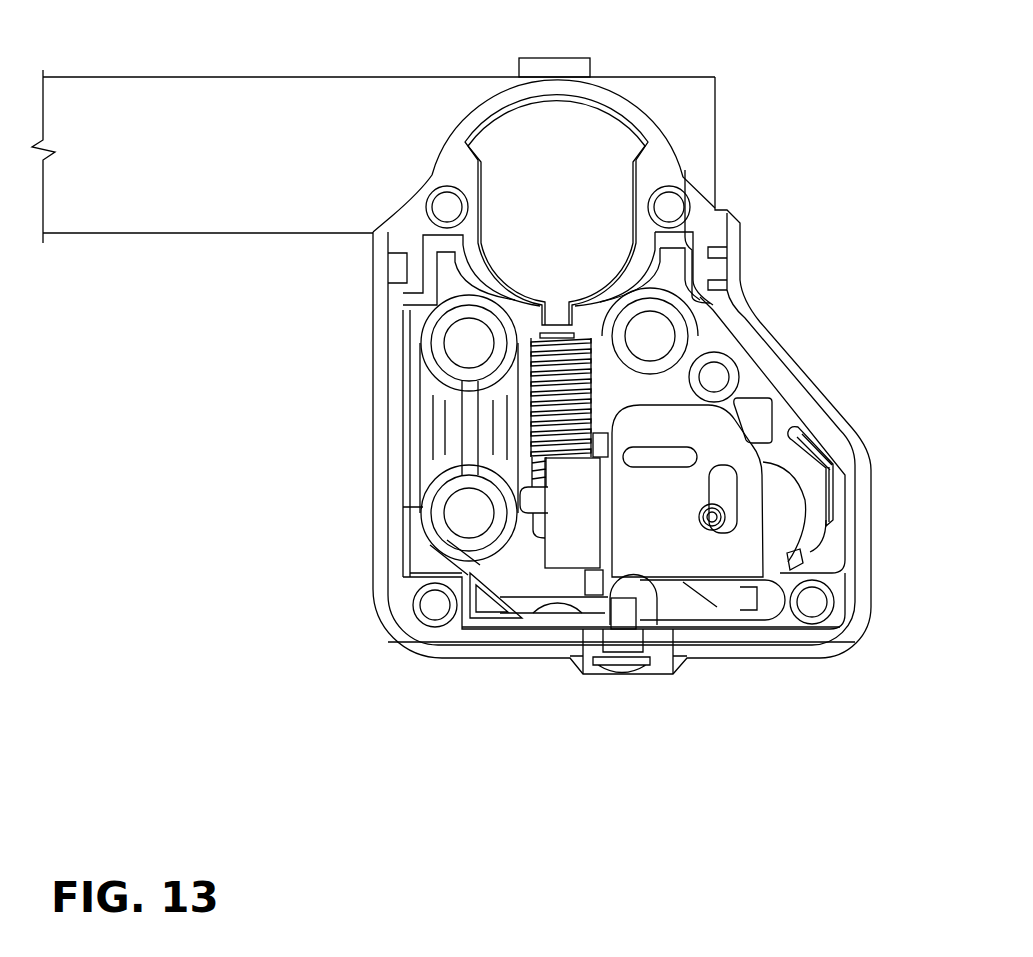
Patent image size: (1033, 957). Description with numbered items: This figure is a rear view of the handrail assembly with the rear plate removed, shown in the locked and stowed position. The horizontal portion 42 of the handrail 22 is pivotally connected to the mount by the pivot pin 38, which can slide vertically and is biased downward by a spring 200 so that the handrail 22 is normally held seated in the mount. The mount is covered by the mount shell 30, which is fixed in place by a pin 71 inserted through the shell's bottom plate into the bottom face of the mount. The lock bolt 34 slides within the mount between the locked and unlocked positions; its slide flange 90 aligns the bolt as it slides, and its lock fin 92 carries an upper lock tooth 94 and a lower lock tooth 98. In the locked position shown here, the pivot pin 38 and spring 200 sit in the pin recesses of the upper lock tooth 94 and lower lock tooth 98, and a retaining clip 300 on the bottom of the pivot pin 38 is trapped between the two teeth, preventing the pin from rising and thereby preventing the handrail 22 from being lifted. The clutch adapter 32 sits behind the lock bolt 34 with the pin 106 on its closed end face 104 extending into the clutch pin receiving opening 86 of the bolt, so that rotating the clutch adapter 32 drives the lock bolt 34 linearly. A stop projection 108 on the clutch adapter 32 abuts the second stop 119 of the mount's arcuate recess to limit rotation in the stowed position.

The handrail 22 is at (320, 76).
The horizontal portion 42 is at (233, 102).
The mount shell 30 is at (872, 506).
The spring 200 is at (528, 402).
The pivot pin 38 is at (530, 420).
The upper lock tooth 94 is at (541, 475).
The retaining clip 300 is at (525, 500).
The lock fin 92 is at (565, 572).
The lower lock tooth 98 is at (547, 552).
The slide flange 90 is at (668, 459).
The clutch pin receiving opening 86 is at (718, 487).
The pin 106 is at (713, 530).
The closed end face 104 is at (773, 540).
The stop projection 108 is at (813, 553).
The clutch adapter 32 is at (808, 528).
The second stop 119 is at (800, 545).
The lock bolt 34 is at (717, 588).
The pin 71 is at (640, 671).